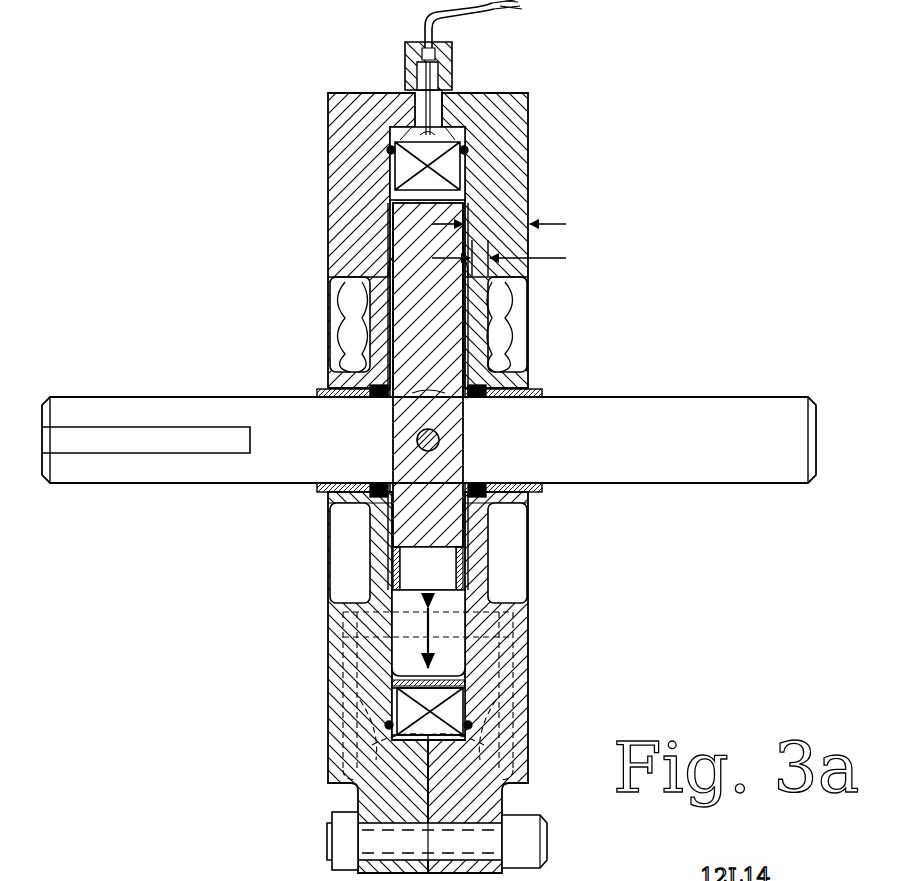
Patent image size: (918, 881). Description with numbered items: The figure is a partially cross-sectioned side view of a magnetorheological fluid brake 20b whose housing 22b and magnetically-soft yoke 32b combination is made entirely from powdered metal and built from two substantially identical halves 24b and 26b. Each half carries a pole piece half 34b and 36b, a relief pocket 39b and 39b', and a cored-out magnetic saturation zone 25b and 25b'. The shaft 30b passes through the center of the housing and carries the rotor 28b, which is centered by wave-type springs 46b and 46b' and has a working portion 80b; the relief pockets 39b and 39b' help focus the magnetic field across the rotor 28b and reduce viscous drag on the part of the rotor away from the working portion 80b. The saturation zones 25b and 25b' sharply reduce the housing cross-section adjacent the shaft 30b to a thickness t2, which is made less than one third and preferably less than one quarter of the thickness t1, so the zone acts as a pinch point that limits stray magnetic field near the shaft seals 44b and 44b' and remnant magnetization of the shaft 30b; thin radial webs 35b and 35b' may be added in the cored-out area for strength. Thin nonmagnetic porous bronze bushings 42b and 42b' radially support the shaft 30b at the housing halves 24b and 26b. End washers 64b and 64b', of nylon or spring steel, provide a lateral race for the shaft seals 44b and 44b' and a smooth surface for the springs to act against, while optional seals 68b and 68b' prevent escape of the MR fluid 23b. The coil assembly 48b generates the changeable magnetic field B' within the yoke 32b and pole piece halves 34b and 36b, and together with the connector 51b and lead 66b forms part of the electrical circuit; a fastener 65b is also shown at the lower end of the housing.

The magnetorheological fluid brake 20b is at (326, 633).
The housing 22b is at (326, 113).
The MR fluid 23b is at (470, 198).
The housing half 24b is at (335, 150).
The magnetic saturation zone 25b is at (548, 327).
The magnetic saturation zone 25b' is at (309, 327).
The housing half 26b is at (528, 105).
The rotor 28b is at (447, 339).
The shaft 30b is at (716, 451).
The magnetically-soft yoke 32b is at (326, 200).
The pole piece half 34b is at (337, 233).
The radial directed web 35b is at (562, 553).
The radial directed web 35b' is at (279, 560).
The pole piece half 36b is at (510, 152).
The relief pocket 39b is at (503, 569).
The relief pocket 39b' is at (352, 542).
The bushing 42b is at (549, 426).
The bushing 42b' is at (286, 426).
The shaft seal 44b is at (354, 579).
The shaft seal 44b' is at (510, 586).
The spring 46b is at (496, 421).
The spring 46b' is at (351, 531).
The coil assembly 48b is at (402, 134).
The connector 51b is at (452, 62).
The end washer 64b is at (406, 418).
The end washer 64b' is at (364, 510).
The bolt 65b is at (560, 864).
The lead 66b is at (414, 43).
The seal 68b is at (368, 715).
The seal 68b' is at (527, 769).
The working portion 80b is at (345, 656).
The changeable magnetic field B' is at (491, 690).
The thickness t1 is at (562, 223).
The thickness t2 is at (513, 258).